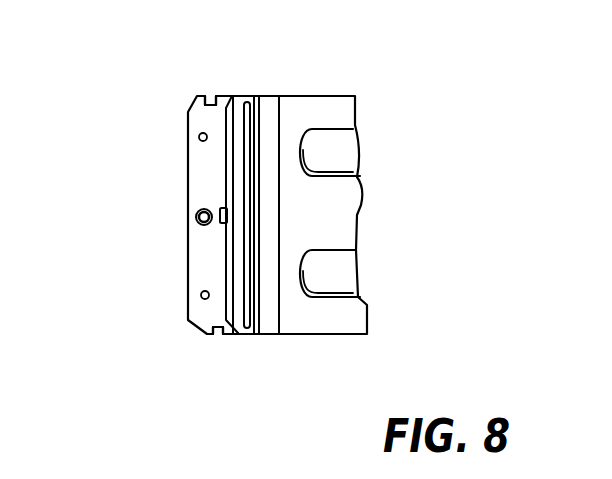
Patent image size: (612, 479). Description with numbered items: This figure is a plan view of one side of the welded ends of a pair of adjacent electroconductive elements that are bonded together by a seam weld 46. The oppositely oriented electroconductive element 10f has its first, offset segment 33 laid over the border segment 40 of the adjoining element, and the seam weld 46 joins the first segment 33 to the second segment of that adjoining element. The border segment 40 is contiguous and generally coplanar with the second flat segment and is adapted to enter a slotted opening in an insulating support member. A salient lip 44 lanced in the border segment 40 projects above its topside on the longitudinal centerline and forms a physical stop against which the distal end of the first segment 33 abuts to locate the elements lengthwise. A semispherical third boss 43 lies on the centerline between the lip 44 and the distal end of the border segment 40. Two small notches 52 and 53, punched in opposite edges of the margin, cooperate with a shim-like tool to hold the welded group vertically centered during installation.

The electroconductive element 10f is at (358, 210).
The border segment 40 is at (202, 314).
The notch 53 is at (212, 94).
The first segment 33 is at (252, 96).
The seam weld 46 is at (258, 125).
The salient lip 44 is at (218, 207).
The third boss 43 is at (196, 221).
The notch 52 is at (219, 335).